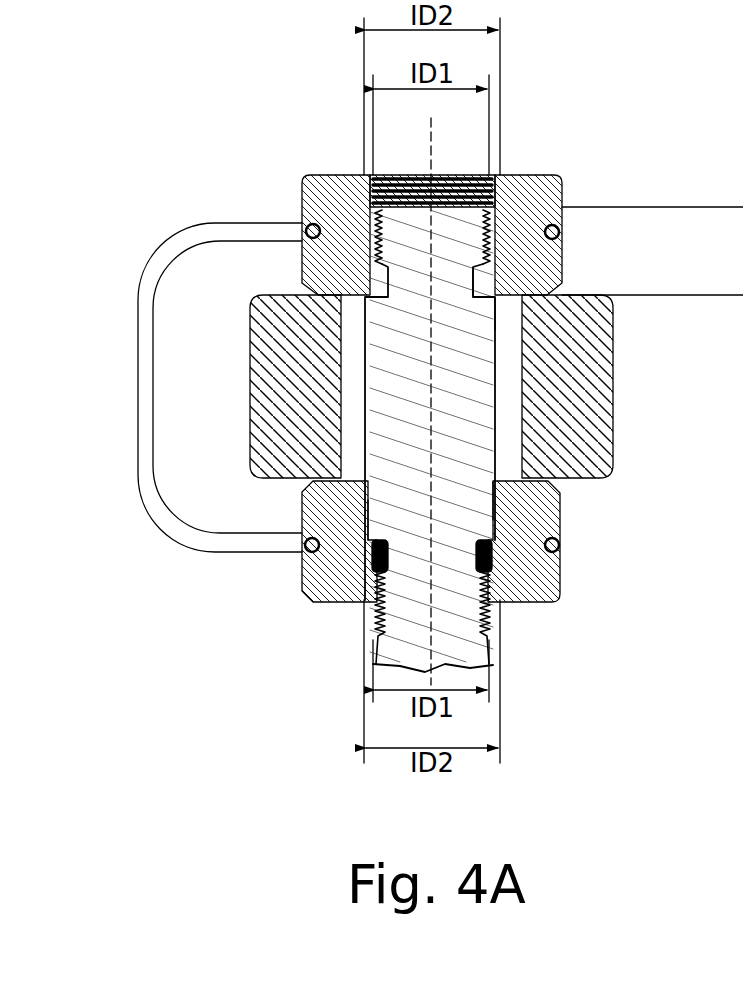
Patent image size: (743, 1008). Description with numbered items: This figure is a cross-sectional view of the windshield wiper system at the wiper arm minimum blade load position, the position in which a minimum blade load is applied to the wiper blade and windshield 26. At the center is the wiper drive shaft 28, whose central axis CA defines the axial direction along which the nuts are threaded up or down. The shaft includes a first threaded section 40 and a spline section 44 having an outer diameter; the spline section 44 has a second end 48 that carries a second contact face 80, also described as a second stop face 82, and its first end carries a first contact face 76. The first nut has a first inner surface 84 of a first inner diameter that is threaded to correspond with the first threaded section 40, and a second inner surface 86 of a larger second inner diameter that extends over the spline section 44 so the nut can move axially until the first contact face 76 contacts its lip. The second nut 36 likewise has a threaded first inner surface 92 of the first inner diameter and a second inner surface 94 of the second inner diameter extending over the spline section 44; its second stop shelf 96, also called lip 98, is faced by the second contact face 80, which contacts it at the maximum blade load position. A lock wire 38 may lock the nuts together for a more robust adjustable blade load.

The windshield 26 is at (731, 288).
The wiper drive shaft 28 is at (440, 424).
The second nut 36 is at (523, 148).
The lock wire 38 is at (281, 564).
The first threaded section 40 is at (511, 625).
The spline section 44 is at (499, 403).
The second end 48 is at (500, 305).
The first contact face 76 is at (501, 531).
The second contact face 80 is at (499, 301).
The second stop face 82 is at (360, 302).
The first inner surface 84 is at (497, 559).
The second inner surface 86 is at (505, 497).
The first inner surface 92 is at (494, 185).
The second inner surface 94 is at (501, 259).
The second stop shelf 96 is at (374, 237).
The lip 98 is at (495, 230).
The central axis CA is at (430, 131).